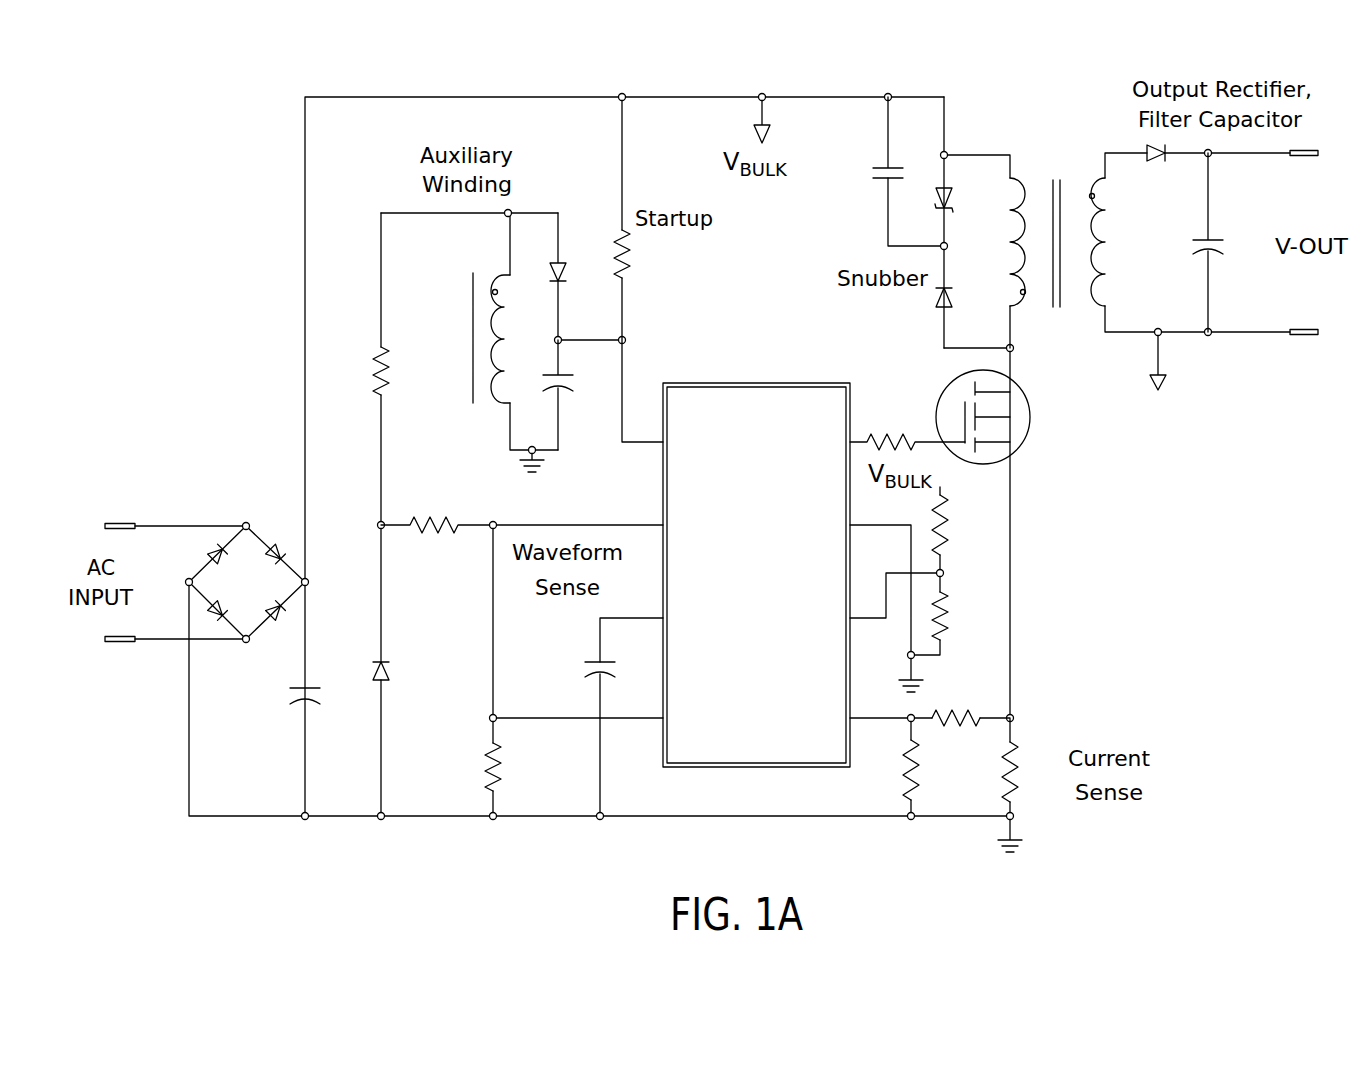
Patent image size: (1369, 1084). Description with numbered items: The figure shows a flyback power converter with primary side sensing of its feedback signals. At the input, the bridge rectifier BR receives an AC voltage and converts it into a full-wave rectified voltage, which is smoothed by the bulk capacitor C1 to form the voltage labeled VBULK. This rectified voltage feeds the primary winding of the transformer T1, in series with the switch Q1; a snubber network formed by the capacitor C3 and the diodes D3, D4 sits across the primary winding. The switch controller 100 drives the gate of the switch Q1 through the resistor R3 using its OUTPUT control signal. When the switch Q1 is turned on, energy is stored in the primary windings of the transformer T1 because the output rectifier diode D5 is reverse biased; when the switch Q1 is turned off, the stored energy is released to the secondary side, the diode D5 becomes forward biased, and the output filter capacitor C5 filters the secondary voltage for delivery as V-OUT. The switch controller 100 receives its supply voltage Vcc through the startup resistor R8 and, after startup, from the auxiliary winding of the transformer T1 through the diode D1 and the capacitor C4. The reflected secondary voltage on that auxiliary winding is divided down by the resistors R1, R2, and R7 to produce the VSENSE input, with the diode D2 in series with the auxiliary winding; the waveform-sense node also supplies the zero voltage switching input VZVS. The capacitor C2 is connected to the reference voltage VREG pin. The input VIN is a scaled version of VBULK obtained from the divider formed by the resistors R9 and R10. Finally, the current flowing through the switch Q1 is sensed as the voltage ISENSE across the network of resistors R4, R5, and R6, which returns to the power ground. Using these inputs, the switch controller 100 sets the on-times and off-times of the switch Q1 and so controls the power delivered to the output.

The switch controller 100 is at (752, 383).
The bridge rectifier BR is at (247, 602).
The bulk capacitor C1 is at (323, 712).
The regulator capacitor C2 is at (581, 668).
The snubber capacitor C3 is at (871, 149).
The auxiliary supply capacitor C4 is at (574, 395).
The output filter capacitor C5 is at (1189, 242).
The auxiliary rectifier diode D1 is at (573, 276).
The diode D2 is at (365, 651).
The snubber diode D3 is at (964, 299).
The snubber zener diode D4 is at (963, 205).
The output rectifier diode D5 is at (1155, 175).
The resistor R1 is at (363, 362).
The waveform sense resistor R2 is at (437, 509).
The gate resistor R3 is at (907, 424).
The resistor R4 is at (894, 770).
The resistor R5 is at (956, 739).
The resistor R6 is at (1029, 772).
The waveform sense resistor R7 is at (511, 767).
The startup resistor R8 is at (638, 256).
The input voltage divider resistor R9 is at (957, 525).
The input voltage divider resistor R10 is at (962, 616).
The transformer T1 is at (783, 264).
The switch Q1 is at (1017, 433).